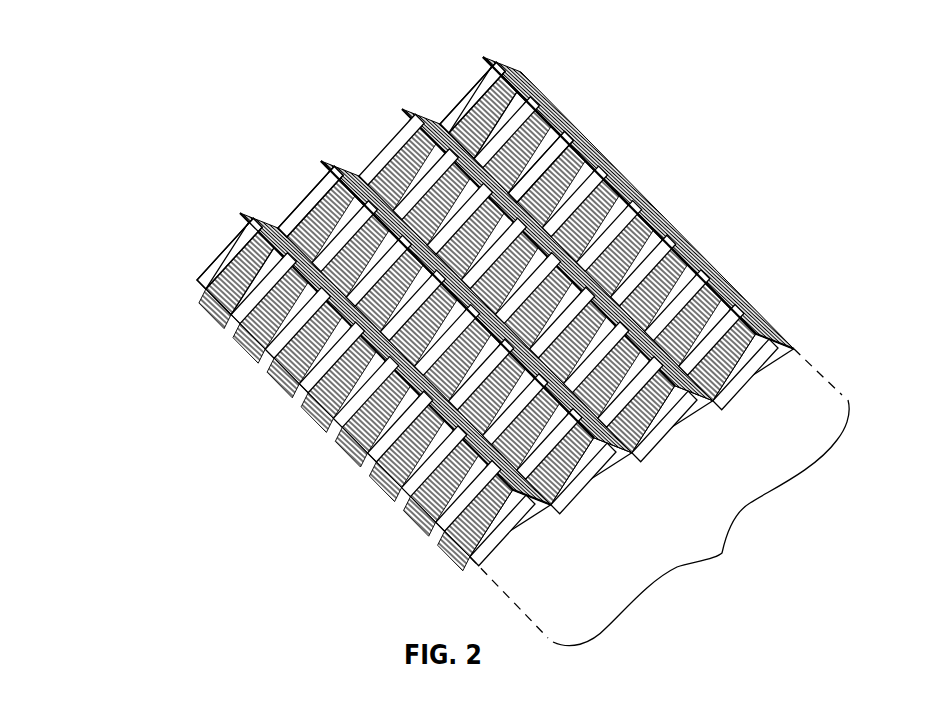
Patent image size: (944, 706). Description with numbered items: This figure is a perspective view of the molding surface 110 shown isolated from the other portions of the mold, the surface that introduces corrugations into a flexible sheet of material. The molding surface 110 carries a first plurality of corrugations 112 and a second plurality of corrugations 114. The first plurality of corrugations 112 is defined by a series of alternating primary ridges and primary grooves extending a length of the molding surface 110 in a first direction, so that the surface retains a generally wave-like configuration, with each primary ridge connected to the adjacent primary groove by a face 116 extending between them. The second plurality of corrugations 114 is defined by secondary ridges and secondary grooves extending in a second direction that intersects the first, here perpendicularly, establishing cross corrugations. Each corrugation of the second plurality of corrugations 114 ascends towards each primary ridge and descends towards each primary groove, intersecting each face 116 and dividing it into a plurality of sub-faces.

The molding surface 110 is at (234, 88).
The first plurality of corrugations 112 is at (659, 497).
The second plurality of corrugations 114 is at (211, 339).
The face 116 is at (285, 189).